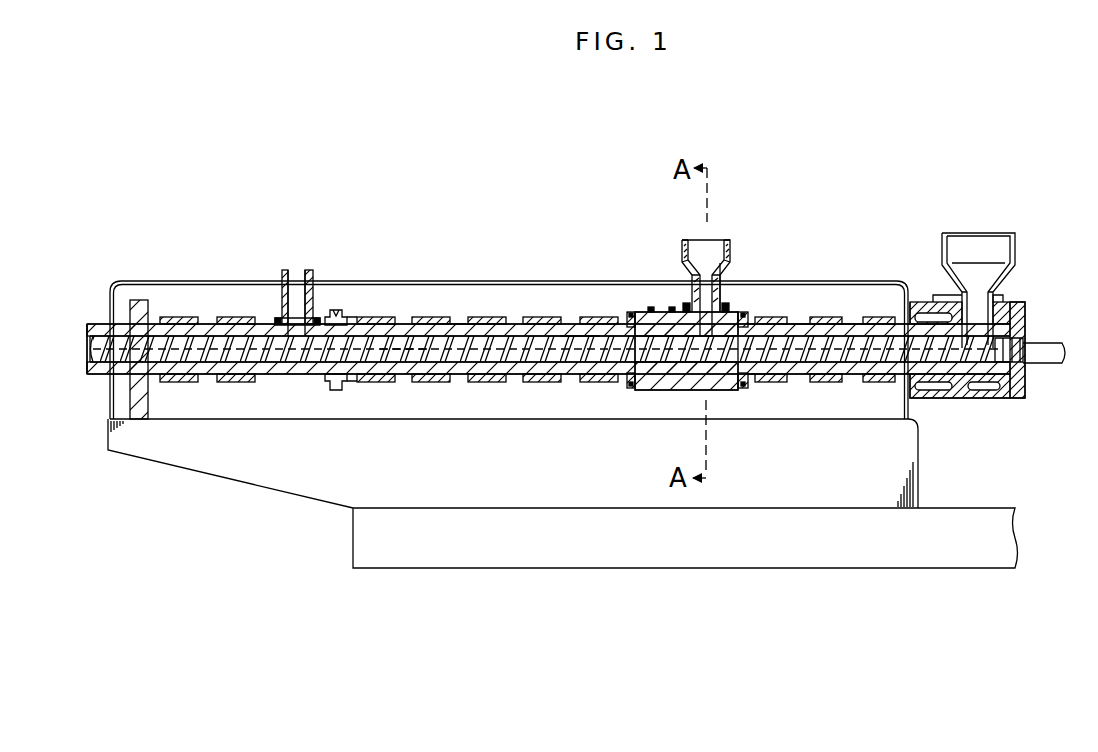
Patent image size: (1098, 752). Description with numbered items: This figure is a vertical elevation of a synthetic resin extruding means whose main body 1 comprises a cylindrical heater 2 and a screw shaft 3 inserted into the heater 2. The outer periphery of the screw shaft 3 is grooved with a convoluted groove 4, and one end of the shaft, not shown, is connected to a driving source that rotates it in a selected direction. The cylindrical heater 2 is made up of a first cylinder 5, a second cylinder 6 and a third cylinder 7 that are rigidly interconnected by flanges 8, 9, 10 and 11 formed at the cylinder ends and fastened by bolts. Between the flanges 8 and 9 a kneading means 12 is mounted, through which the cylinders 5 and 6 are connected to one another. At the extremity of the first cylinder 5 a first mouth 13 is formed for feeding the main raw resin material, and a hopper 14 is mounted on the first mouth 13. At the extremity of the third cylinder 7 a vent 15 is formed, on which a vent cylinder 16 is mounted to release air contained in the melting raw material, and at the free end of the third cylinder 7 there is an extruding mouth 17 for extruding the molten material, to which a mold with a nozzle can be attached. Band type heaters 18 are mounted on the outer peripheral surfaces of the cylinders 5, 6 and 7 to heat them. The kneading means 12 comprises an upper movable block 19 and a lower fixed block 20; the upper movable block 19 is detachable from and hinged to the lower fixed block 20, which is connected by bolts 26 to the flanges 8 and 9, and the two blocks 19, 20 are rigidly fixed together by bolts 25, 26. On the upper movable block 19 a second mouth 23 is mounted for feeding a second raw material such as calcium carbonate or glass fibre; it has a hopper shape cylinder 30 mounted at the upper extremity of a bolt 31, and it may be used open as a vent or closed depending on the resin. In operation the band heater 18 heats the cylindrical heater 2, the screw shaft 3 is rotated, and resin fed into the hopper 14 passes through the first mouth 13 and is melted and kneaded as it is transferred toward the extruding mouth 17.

The main body of extruding means 1 is at (837, 209).
The cylindrical heater 2 is at (568, 316).
The screw shaft 3 is at (518, 338).
The convoluted groove 4 is at (402, 333).
The first cylinder 5 is at (853, 332).
The second cylinder 6 is at (455, 327).
The third cylinder 7 is at (268, 327).
The flange 8 is at (760, 314).
The flange 9 is at (633, 335).
The flange 10 is at (348, 315).
The flange 11 is at (333, 312).
The kneading means 12 is at (787, 316).
The first mouth 13 is at (984, 292).
The hopper 14 is at (945, 248).
The vent 15 is at (297, 278).
The vent cylinder 16 is at (310, 305).
The extruding mouth 17 is at (88, 352).
The band type heater 18 is at (232, 317).
The upper movable block 19 is at (660, 316).
The lower fixed block 20 is at (666, 390).
The second mouth 23 is at (706, 288).
The bolt 25 is at (650, 308).
The bolt 26 is at (627, 317).
The hopper shape cylinder 30 is at (730, 302).
The bolt 31 is at (687, 302).